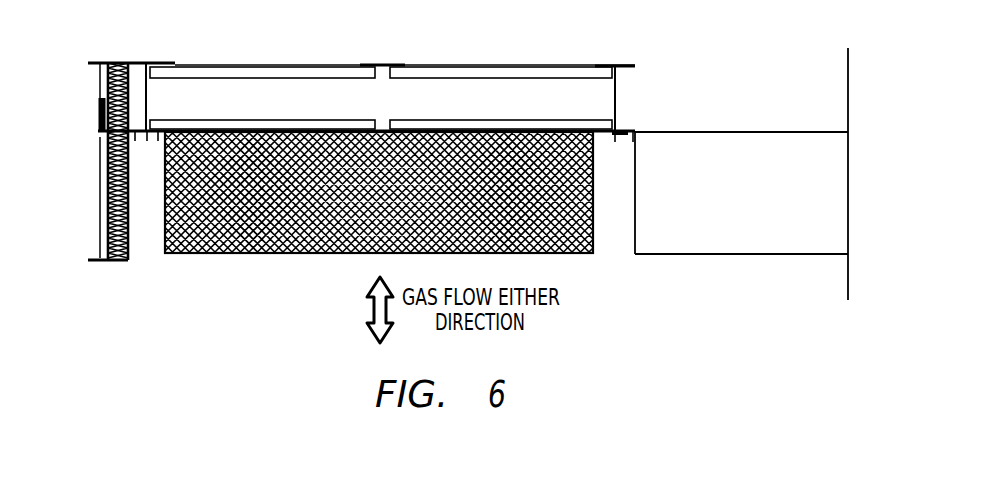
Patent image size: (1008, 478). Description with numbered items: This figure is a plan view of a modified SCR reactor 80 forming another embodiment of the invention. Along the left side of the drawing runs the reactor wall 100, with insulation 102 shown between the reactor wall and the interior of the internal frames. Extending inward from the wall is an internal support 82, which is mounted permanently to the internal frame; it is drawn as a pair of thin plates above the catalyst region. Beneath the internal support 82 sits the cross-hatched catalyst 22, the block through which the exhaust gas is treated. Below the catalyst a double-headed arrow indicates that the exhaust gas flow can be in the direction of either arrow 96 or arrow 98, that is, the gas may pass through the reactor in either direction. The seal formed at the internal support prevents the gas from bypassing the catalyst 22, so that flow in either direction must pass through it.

The modified SCR reactor 80 is at (724, 84).
The internal support 82 is at (147, 102).
The catalyst 22 is at (585, 225).
The reactor wall 100 is at (99, 185).
The insulation 102 is at (108, 229).
The arrow 98 is at (375, 287).
The arrow 96 is at (375, 331).